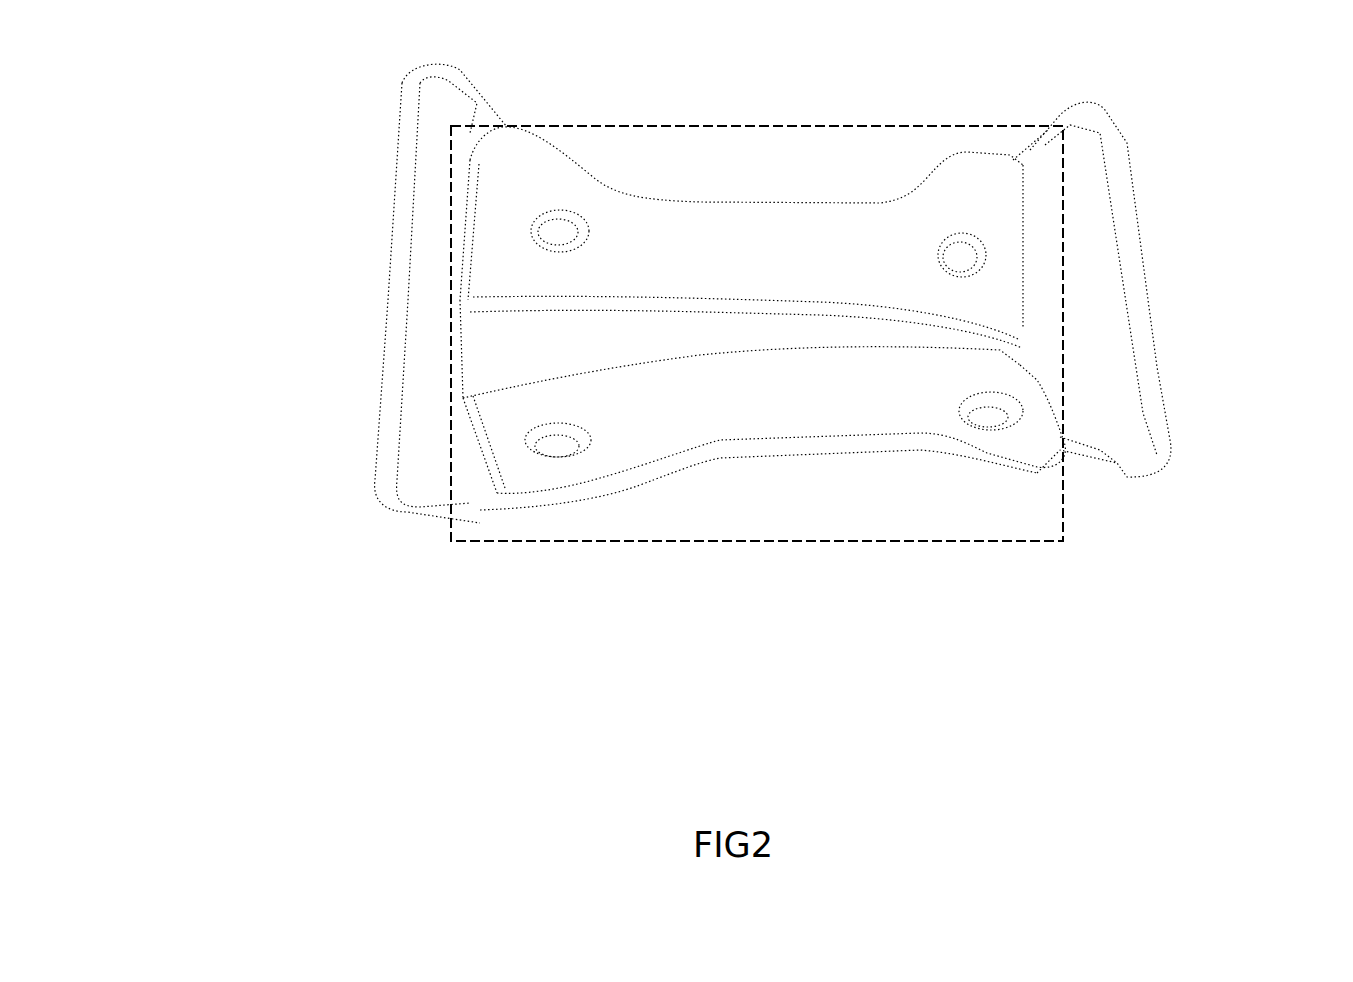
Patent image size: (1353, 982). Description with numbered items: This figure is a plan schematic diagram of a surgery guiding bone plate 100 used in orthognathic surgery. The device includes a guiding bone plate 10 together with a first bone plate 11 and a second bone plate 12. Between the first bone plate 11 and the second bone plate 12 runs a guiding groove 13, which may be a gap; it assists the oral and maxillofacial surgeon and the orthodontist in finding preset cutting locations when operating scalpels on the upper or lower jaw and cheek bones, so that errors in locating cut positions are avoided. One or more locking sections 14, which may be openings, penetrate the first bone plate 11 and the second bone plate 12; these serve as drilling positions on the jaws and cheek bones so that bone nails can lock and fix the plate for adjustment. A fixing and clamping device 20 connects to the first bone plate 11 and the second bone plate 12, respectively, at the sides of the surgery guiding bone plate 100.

The surgery guiding bone plate 100 is at (643, 771).
The guiding bone plate 10 is at (817, 541).
The first bone plate 11 is at (748, 238).
The second bone plate 12 is at (750, 403).
The guiding groove 13 is at (498, 352).
The locking sections 14 is at (553, 223).
The fixing and clamping device 20 is at (375, 408).